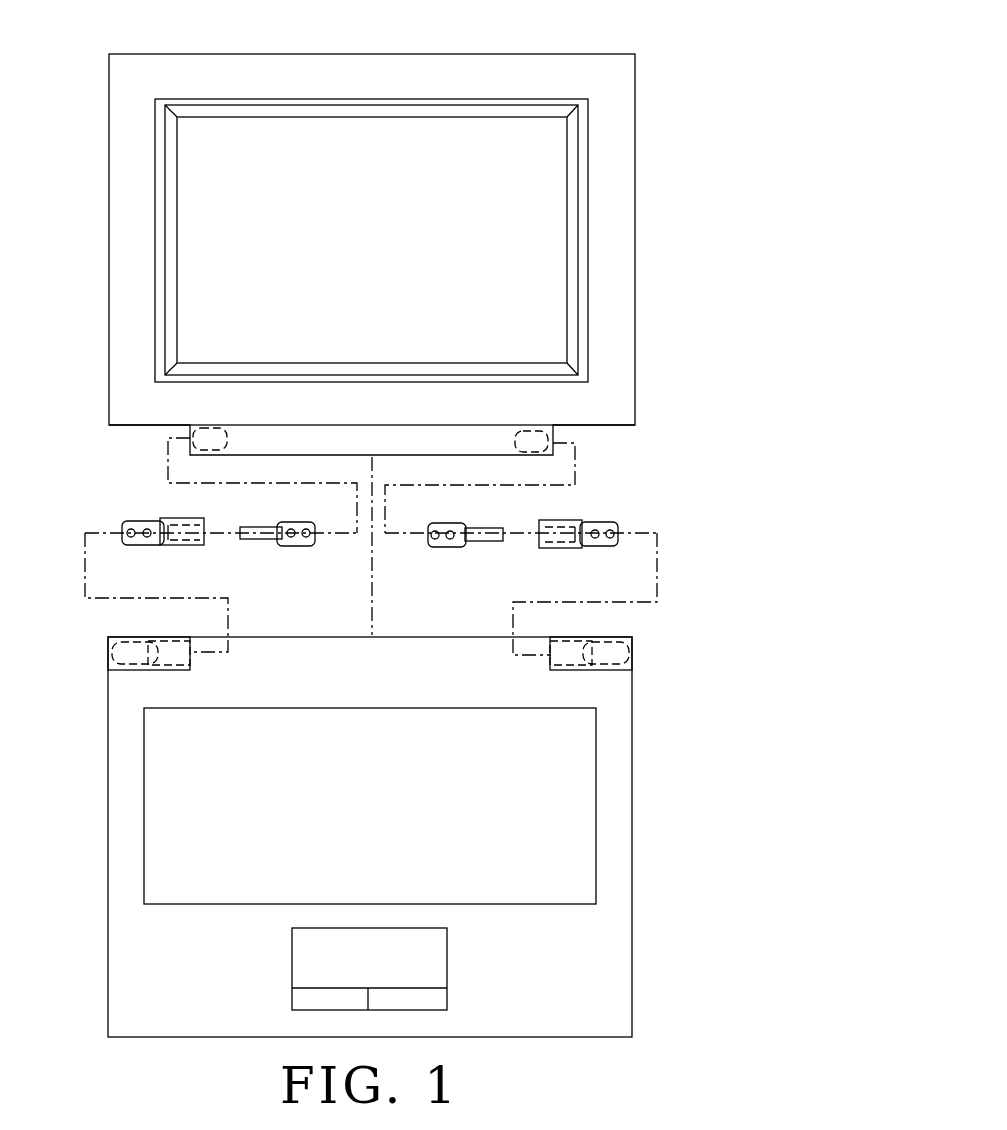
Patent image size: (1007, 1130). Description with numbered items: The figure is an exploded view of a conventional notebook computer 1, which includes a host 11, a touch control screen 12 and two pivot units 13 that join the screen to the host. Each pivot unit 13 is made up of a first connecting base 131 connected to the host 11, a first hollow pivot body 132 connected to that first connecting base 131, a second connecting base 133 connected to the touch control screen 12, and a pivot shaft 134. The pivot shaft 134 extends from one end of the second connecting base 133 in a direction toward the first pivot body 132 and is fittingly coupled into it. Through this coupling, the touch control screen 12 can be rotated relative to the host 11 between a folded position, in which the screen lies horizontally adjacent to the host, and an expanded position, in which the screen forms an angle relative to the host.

The notebook computer 1 is at (376, 527).
The host 11 is at (625, 828).
The touch control screen 12 is at (608, 360).
The pivot unit 13 is at (370, 530).
The first connecting base 131 is at (142, 539).
The first hollow pivot body 132 is at (175, 523).
The second connecting base 133 is at (293, 540).
The pivot shaft 134 is at (255, 539).